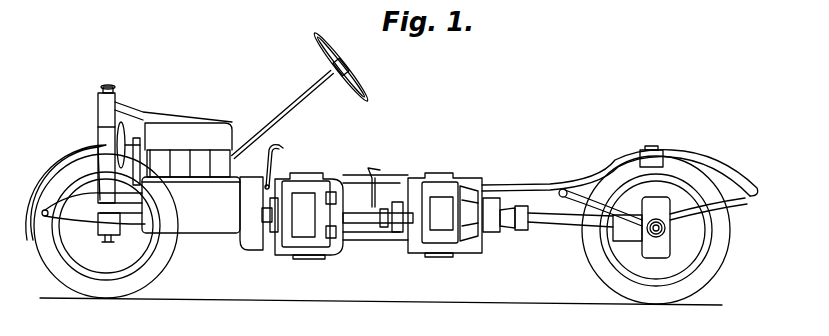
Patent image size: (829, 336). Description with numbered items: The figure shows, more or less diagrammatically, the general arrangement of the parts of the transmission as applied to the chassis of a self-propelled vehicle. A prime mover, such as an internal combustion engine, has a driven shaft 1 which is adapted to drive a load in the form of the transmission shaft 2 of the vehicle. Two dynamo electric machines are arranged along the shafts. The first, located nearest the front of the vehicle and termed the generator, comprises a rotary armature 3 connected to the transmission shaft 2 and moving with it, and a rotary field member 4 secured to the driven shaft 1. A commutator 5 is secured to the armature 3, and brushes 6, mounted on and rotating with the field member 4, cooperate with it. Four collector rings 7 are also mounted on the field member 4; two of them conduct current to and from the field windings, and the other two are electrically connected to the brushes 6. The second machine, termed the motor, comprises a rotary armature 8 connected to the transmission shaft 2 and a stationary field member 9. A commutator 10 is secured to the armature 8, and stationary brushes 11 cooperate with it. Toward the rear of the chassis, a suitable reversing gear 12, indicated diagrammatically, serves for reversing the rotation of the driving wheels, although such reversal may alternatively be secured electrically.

The driven shaft 1 is at (240, 239).
The transmission shaft 2 is at (383, 228).
The rotary armature 3 is at (287, 232).
The rotary field member 4 is at (312, 245).
The commutator 5 is at (331, 240).
The brushes 6 is at (328, 187).
The collector rings 7 is at (358, 232).
The rotary armature 8 is at (472, 183).
The stationary field member 9 is at (443, 183).
The commutator 10 is at (468, 240).
The stationary brushes 11 is at (492, 178).
The reversing gear 12 is at (492, 226).